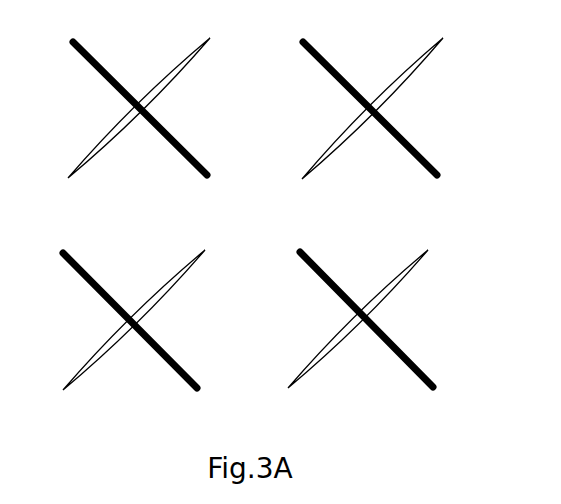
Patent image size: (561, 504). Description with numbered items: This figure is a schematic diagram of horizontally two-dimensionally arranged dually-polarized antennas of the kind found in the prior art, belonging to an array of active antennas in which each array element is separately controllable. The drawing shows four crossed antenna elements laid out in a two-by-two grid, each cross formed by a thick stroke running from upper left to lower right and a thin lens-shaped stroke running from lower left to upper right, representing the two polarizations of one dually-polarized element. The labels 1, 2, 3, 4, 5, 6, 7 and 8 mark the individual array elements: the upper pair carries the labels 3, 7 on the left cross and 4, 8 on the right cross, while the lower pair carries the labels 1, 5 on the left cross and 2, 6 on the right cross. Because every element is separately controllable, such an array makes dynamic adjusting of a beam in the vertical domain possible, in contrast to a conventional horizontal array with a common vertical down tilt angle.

The first element 1 is at (131, 339).
The second element 2 is at (354, 339).
The third element 3 is at (135, 128).
The fourth element 4 is at (368, 128).
The fifth element 5 is at (134, 341).
The sixth element 6 is at (370, 340).
The seventh element 7 is at (144, 130).
The eighth element 8 is at (374, 130).